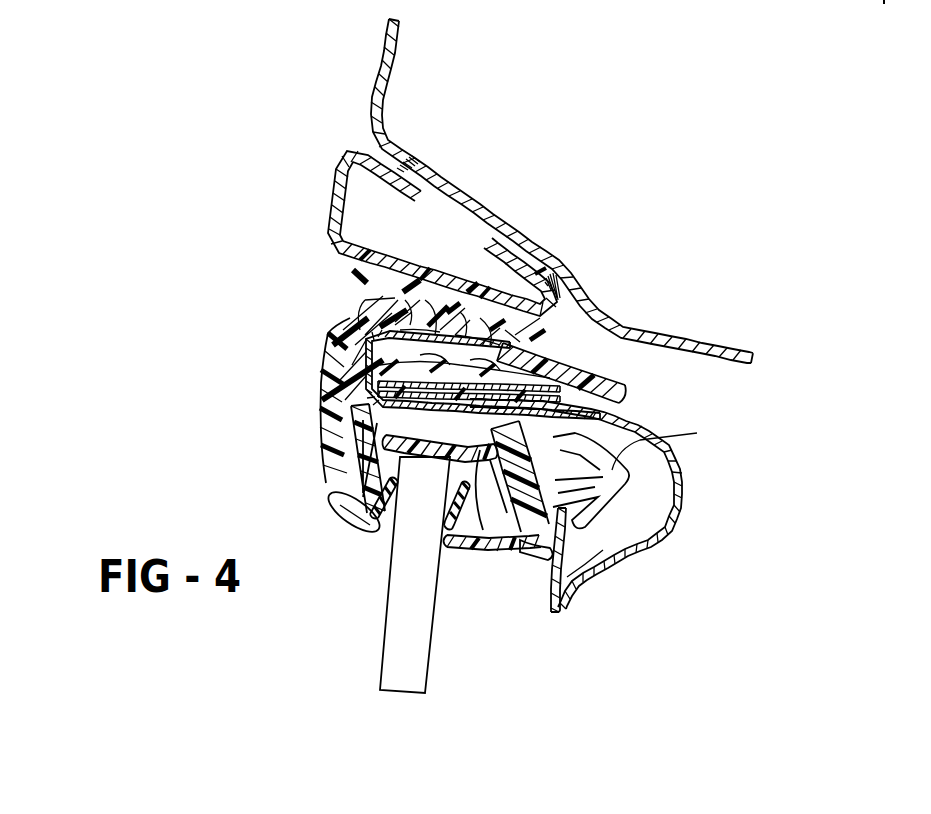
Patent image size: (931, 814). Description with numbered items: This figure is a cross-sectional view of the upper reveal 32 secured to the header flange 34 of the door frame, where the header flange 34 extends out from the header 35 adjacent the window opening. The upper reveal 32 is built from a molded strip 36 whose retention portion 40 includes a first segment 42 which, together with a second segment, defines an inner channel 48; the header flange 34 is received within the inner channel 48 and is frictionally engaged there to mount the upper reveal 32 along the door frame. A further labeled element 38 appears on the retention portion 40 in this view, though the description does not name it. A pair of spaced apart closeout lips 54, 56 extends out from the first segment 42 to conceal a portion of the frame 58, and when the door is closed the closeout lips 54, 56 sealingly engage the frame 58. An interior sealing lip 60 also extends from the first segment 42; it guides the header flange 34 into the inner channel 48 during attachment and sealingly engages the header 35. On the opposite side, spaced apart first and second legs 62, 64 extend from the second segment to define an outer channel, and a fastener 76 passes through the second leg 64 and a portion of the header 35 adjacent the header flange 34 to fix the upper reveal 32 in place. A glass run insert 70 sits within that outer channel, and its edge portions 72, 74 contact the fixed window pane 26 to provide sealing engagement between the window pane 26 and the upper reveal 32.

The fixed window pane 26 is at (433, 627).
The upper reveal 32 is at (244, 366).
The header flange 34 is at (505, 388).
The header 35 is at (683, 500).
The molded strip 36 is at (338, 317).
The upper seal wall 38 is at (344, 321).
The retention portion 40 is at (363, 370).
The first segment 42 is at (450, 345).
The inner channel 48 is at (365, 381).
The closeout lip 54 is at (340, 227).
The closeout lip 56 is at (440, 330).
The frame 58 is at (707, 347).
The interior sealing lip 60 is at (603, 383).
The first leg 62 is at (312, 437).
The second leg 64 is at (570, 503).
The glass run insert 70 is at (357, 527).
The edge portion 72 is at (400, 523).
The edge portion 74 is at (473, 513).
The fastener 76 is at (610, 455).